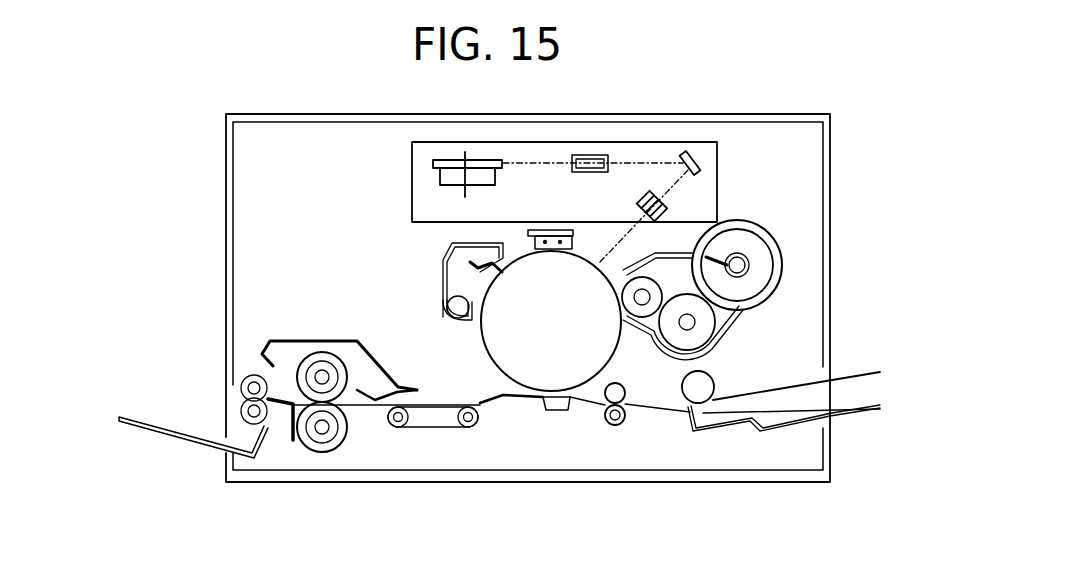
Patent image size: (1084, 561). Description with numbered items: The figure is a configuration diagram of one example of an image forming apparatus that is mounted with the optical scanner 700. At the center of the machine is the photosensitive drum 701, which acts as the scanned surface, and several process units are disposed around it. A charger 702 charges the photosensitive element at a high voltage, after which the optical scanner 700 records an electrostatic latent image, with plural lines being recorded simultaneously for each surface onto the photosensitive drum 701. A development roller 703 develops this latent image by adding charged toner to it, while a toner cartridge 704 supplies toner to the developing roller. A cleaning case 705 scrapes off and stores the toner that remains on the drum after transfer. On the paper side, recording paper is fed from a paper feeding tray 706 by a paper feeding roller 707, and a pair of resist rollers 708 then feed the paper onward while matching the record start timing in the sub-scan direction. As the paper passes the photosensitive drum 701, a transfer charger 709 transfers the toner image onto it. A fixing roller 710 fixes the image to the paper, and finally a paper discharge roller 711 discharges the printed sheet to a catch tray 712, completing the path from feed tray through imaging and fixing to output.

The optical scanner 700 is at (645, 152).
The photosensitive drum 701 is at (495, 340).
The charger 702 is at (528, 230).
The development roller 703 is at (663, 277).
The toner cartridge 704 is at (743, 242).
The cleaning case 705 is at (458, 277).
The paper feeding tray 706 is at (793, 403).
The paper feeding roller 707 is at (707, 374).
The resist rollers 708 is at (622, 423).
The transfer charger 709 is at (555, 410).
The fixing roller 710 is at (298, 380).
The paper discharge roller 711 is at (270, 420).
The catch tray 712 is at (178, 421).